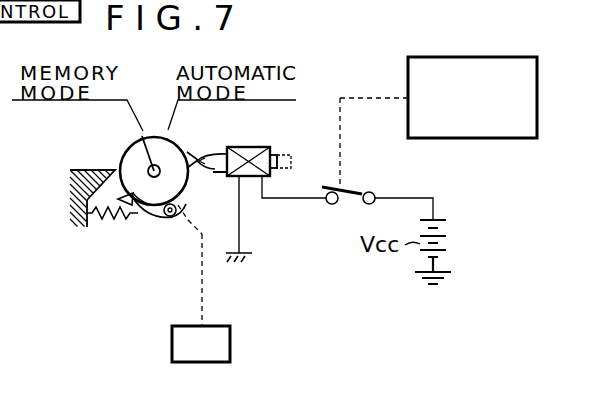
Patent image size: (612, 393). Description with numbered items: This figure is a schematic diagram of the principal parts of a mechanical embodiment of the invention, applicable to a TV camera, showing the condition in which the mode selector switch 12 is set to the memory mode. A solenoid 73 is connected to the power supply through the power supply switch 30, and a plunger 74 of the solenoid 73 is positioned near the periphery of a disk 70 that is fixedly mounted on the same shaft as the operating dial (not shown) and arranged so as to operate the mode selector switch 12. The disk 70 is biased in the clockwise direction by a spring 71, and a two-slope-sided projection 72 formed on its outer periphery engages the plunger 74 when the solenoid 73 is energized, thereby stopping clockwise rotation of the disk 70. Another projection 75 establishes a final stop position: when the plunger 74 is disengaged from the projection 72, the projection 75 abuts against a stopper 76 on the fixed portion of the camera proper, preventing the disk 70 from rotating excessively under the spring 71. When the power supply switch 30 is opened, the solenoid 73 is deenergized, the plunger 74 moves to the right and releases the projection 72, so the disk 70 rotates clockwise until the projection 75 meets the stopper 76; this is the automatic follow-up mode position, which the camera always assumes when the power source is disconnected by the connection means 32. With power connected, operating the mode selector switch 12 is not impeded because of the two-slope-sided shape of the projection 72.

The mode selector switch 12 is at (231, 344).
The power supply switch 30 is at (349, 183).
The connection means 32 is at (530, 57).
The disk 70 is at (178, 219).
The spring 71 is at (120, 218).
The two-slope-sided projection 72 is at (197, 152).
The solenoid 73 is at (256, 147).
The plunger 74 is at (207, 174).
The projection 75 is at (137, 218).
The stopper 76 is at (112, 168).